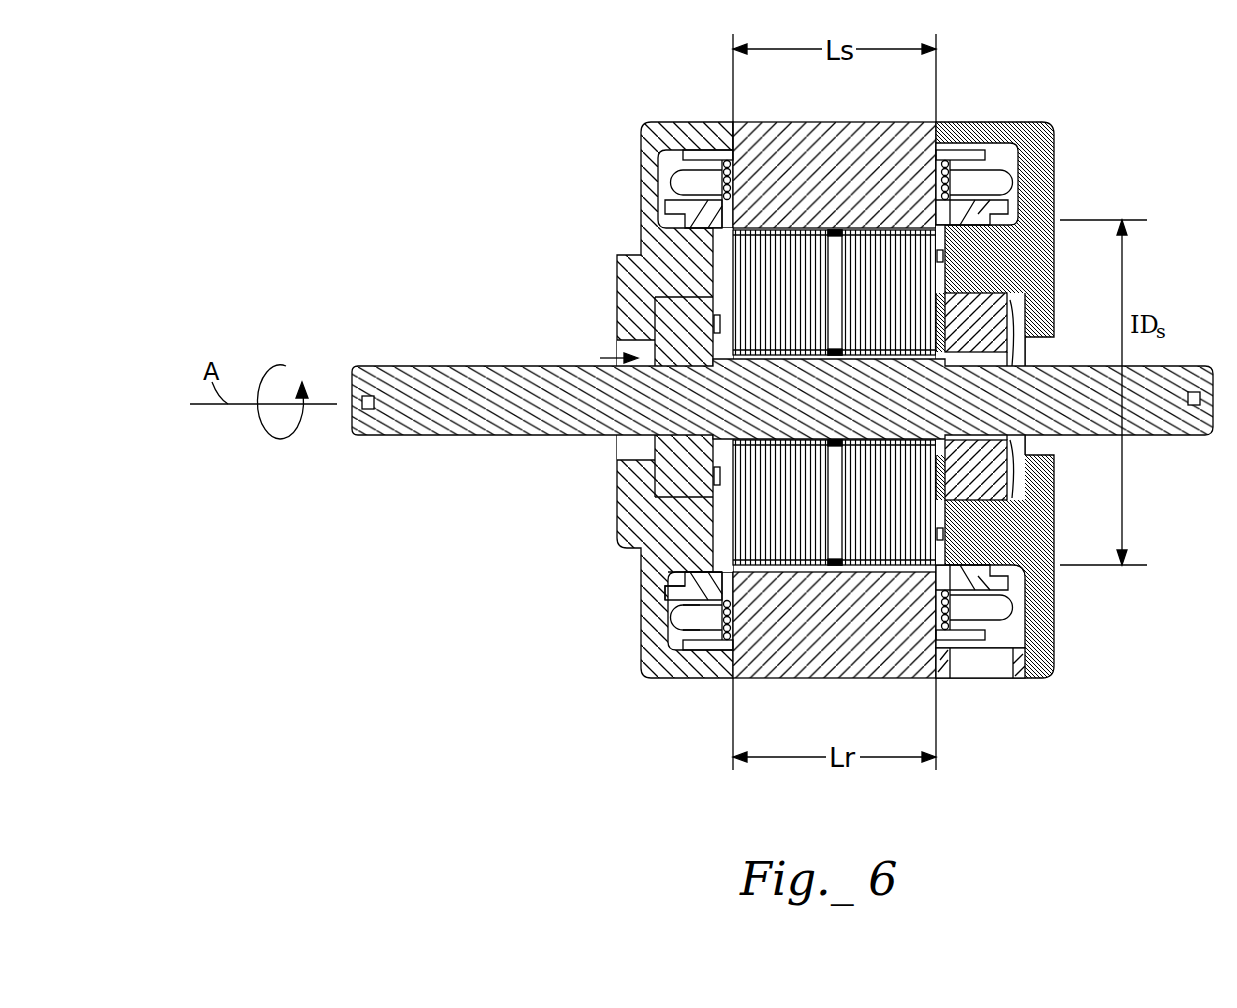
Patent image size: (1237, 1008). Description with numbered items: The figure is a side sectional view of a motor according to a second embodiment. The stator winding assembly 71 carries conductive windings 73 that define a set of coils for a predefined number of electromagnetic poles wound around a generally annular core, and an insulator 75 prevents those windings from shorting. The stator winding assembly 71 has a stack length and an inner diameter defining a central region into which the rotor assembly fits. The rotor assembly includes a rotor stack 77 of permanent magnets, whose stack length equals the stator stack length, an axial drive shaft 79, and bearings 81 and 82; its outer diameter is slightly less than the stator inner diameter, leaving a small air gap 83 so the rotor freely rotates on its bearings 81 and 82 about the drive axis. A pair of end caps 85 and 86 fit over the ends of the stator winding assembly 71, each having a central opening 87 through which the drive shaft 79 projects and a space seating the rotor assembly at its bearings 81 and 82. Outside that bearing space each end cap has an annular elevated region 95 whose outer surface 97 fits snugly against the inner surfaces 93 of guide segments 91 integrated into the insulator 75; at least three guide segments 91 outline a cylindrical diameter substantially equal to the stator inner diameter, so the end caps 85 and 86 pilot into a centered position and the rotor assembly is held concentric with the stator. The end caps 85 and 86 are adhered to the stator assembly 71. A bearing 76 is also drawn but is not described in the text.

The stator winding assembly 71 is at (867, 122).
The conductive windings 73 is at (718, 122).
The insulator 75 is at (668, 212).
The bearing 76 is at (1012, 604).
The rotor stack 77 is at (757, 266).
The axial drive shaft 79 is at (430, 370).
The bearing 81 is at (662, 298).
The bearing 82 is at (980, 312).
The air gap 83 is at (858, 572).
The end cap 85 is at (682, 530).
The end cap 86 is at (1045, 557).
The central opening 87 is at (602, 358).
The guide segments 91 is at (700, 578).
The inner surfaces 93 is at (667, 573).
The annular elevated region 95 is at (660, 238).
The outer surface 97 is at (700, 572).